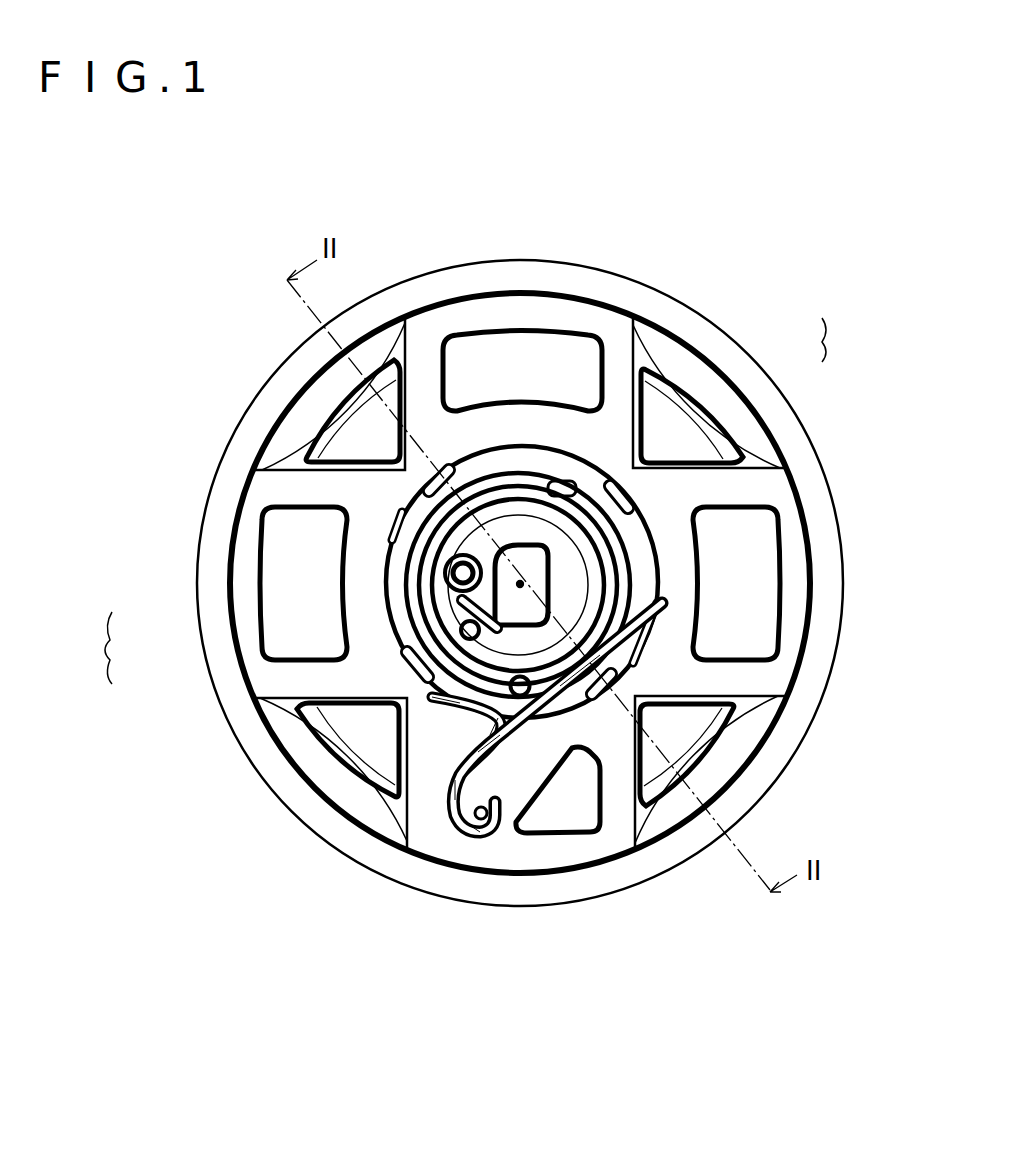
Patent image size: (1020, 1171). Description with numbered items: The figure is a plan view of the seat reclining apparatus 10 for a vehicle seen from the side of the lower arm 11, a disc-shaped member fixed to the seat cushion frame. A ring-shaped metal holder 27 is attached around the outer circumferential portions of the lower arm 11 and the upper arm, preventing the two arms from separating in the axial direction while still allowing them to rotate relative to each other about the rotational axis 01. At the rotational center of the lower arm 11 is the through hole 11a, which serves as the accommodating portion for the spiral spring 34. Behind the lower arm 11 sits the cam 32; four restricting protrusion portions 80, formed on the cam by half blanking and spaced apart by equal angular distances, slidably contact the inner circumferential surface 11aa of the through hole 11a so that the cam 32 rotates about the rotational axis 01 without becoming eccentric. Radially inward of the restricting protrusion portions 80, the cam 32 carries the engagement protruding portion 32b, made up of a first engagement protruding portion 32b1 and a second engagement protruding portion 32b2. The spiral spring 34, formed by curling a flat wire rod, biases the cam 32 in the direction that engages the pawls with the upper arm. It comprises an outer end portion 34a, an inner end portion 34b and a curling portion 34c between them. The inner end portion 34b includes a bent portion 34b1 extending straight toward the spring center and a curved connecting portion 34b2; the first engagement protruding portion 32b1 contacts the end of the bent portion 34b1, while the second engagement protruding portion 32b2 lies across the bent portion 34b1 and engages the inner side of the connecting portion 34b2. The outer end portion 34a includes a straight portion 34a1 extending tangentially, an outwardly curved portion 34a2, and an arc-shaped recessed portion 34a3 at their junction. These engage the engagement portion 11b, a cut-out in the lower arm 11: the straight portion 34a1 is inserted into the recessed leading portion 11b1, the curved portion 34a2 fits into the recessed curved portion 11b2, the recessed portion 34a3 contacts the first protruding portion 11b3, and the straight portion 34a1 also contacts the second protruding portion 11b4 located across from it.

The seat reclining apparatus 10 is at (643, 223).
The holder 27 is at (268, 368).
The cam 32 is at (503, 650).
The engagement protruding portion 32b is at (851, 334).
The first engagement protruding portion 32b1 is at (548, 548).
The second engagement protruding portion 32b2 is at (478, 560).
The spiral spring 34 is at (512, 468).
The outer end portion 34a is at (376, 827).
The straight portion 34a1 is at (446, 760).
The curved portion 34a2 is at (470, 812).
The recessed portion 34a3 is at (452, 790).
The inner end portion 34b is at (87, 648).
The bent portion 34b1 is at (465, 634).
The connecting portion 34b2 is at (458, 618).
The curling portion 34c is at (412, 560).
The restricting protrusion portions 80 is at (436, 478).
The rotational axis 01 is at (523, 584).
The lower arm 11 is at (663, 810).
The through hole 11a is at (652, 668).
The inner circumferential surface 11aa is at (452, 577).
The engagement portion 11b is at (683, 943).
The recessed leading portion 11b1 is at (505, 780).
The recessed curved portion 11b2 is at (468, 822).
The first protruding portion 11b3 is at (499, 830).
The second protruding portion 11b4 is at (550, 780).